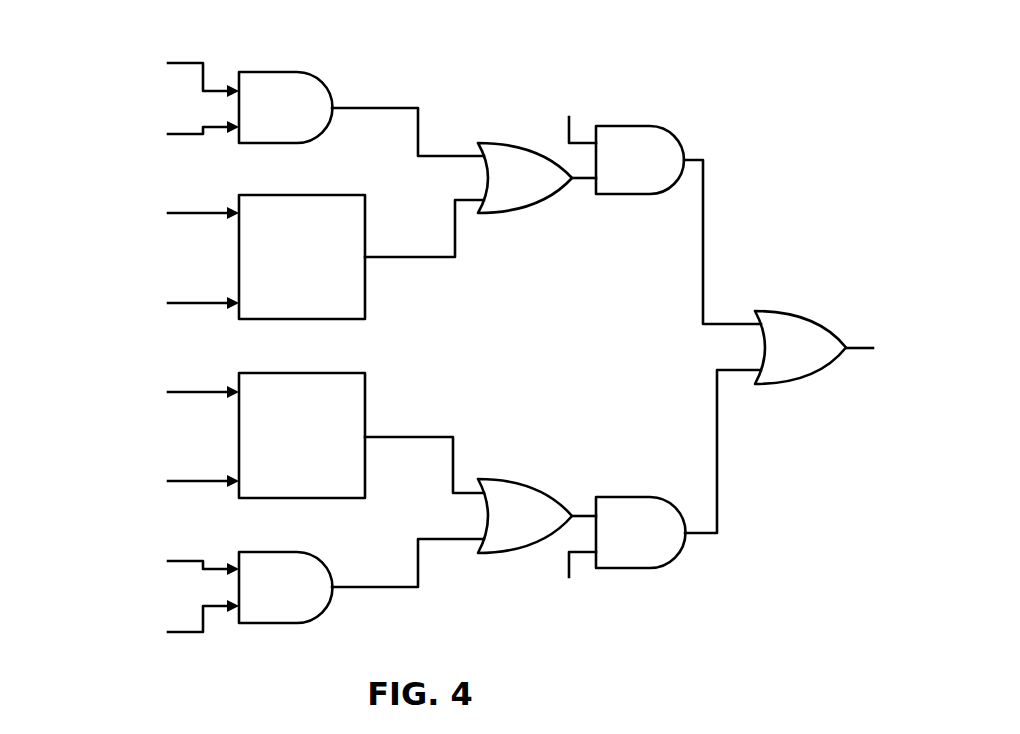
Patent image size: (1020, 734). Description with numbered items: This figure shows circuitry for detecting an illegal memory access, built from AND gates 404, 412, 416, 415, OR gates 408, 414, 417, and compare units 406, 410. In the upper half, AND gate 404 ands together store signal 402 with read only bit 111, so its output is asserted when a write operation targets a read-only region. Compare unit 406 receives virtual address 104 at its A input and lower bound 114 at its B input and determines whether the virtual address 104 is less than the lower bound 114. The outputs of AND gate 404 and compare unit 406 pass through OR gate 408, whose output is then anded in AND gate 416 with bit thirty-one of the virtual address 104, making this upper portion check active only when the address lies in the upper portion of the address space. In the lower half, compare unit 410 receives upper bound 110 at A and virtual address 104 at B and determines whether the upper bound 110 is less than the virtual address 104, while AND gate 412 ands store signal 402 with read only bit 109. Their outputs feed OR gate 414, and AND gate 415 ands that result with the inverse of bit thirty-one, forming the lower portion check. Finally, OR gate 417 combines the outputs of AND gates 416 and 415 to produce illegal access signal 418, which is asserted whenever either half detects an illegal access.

The store signal 402 is at (152, 312).
The AND gate 404 is at (361, 114).
The read only bit 111 is at (141, 134).
The virtual address 104 is at (347, 352).
The compare unit 406 is at (361, 257).
The lower bound 114 is at (150, 301).
The OR gate 408 is at (537, 178).
The upper bound 110 is at (150, 391).
The compare unit 410 is at (361, 435).
The AND gate 412 is at (361, 581).
The read only bit 109 is at (141, 626).
The OR gate 414 is at (537, 516).
The AND gate 415 is at (678, 469).
The AND gate 416 is at (678, 225).
The OR gate 417 is at (800, 347).
The illegal access signal 418 is at (870, 307).